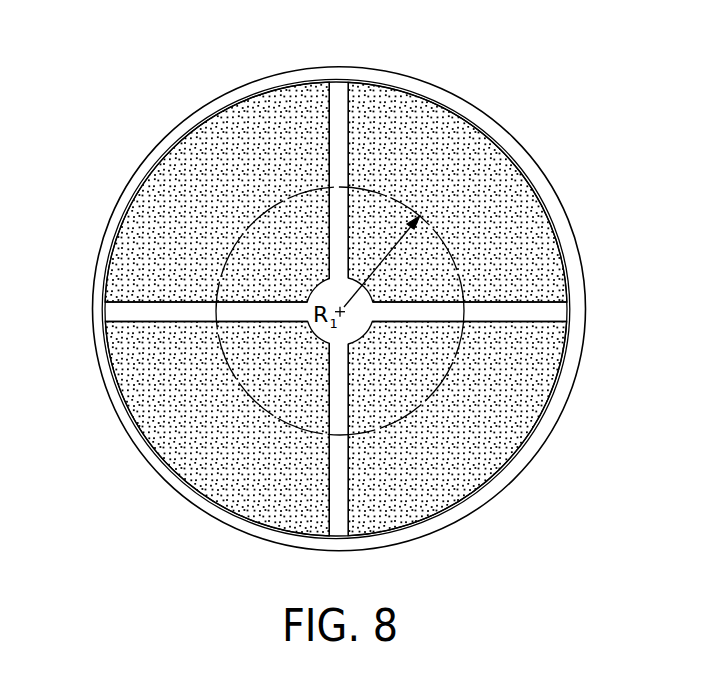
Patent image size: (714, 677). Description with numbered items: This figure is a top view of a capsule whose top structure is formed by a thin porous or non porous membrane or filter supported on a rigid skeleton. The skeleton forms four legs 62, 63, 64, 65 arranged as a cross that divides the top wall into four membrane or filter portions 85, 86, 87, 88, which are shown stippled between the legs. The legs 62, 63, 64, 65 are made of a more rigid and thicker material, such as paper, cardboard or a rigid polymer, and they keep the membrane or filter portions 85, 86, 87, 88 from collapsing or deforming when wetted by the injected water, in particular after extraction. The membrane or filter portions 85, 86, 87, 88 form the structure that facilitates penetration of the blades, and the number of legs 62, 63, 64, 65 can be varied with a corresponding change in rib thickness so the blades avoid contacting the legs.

The leg 62 is at (340, 513).
The leg 63 is at (162, 312).
The leg 64 is at (340, 112).
The leg 65 is at (528, 310).
The membrane or filter portion 85 is at (168, 199).
The membrane or filter portion 86 is at (505, 198).
The membrane or filter portion 87 is at (168, 423).
The membrane or filter portion 88 is at (507, 422).